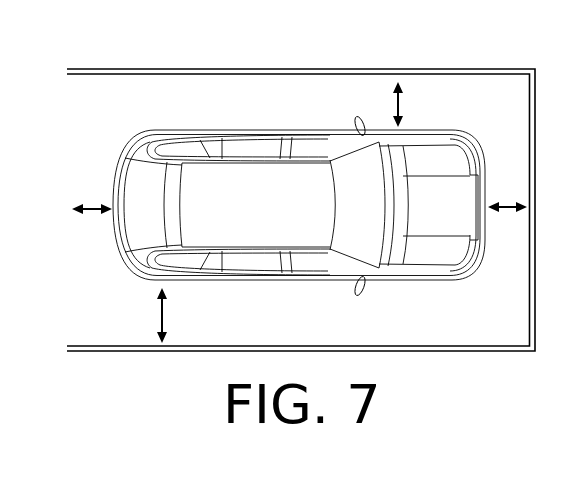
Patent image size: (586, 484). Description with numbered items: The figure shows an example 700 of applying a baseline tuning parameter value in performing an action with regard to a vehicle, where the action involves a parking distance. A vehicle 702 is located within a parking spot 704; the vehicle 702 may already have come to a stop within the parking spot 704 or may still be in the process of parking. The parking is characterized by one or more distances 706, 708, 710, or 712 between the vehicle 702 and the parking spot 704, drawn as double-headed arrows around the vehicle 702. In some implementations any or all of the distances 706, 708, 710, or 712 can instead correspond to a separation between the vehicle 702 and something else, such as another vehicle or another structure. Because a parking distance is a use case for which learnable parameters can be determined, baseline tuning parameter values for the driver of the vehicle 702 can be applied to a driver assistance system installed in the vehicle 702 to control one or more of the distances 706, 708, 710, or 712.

The example 700 is at (508, 37).
The vehicle 702 is at (286, 219).
The parking spot 704 is at (110, 110).
The distance 706 is at (398, 100).
The distance 708 is at (500, 211).
The distance 710 is at (162, 313).
The distance 712 is at (88, 213).